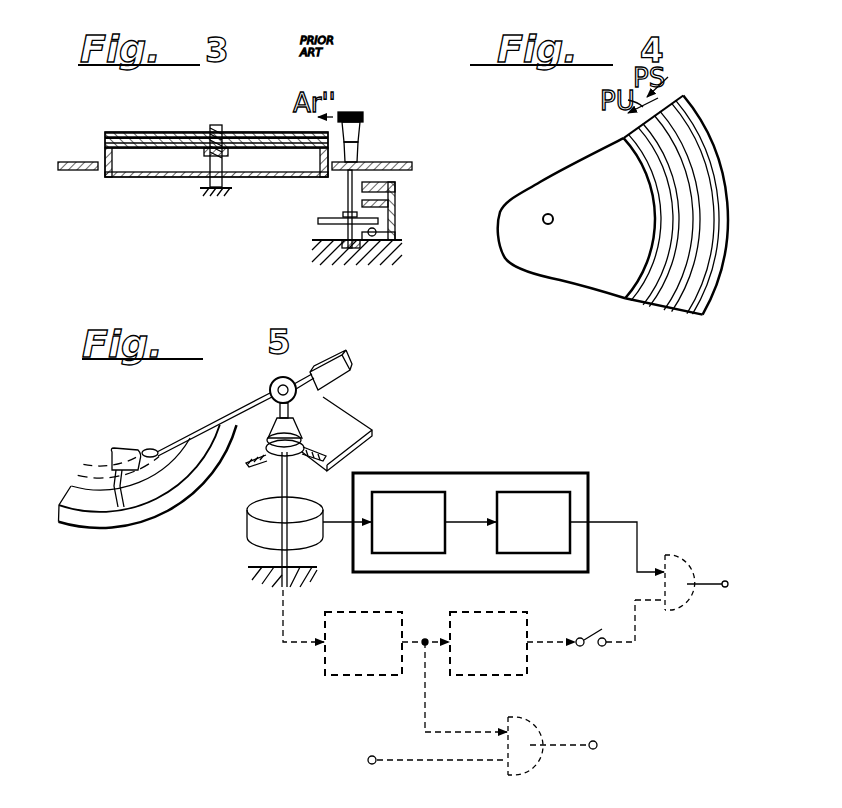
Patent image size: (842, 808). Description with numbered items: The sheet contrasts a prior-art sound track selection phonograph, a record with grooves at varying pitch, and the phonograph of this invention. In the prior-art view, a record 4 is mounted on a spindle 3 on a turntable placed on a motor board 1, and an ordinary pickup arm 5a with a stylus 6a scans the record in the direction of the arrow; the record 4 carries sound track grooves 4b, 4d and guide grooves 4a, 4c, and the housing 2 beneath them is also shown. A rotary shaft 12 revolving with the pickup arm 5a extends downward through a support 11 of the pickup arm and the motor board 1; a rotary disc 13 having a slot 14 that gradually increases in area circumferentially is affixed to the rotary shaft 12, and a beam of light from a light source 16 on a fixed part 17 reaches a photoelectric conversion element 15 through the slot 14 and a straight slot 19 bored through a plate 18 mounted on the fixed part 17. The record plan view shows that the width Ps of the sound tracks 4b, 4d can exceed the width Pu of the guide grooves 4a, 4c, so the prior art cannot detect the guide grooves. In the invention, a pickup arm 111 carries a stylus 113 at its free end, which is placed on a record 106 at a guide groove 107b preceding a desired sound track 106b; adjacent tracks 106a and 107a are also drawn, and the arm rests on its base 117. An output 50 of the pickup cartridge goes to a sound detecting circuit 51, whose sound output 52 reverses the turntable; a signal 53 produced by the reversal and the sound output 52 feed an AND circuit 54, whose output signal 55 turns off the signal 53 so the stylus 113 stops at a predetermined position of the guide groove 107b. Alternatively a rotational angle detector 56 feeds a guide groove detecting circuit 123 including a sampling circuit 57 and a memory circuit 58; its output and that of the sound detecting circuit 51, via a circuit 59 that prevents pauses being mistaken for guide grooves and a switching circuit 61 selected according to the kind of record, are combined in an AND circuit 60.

In FIG. 3, the motor board 1 is at (70, 162).
In FIG. 3, the housing 2 is at (115, 172).
In FIG. 3, the spindle 3 is at (222, 127).
In FIG. 3, the record 4 is at (206, 121).
In FIG. 4, the record 4 is at (572, 177).
In FIG. 3, the guide groove 4a is at (107, 132).
In FIG. 4, the guide groove 4a is at (690, 311).
In FIG. 3, the sound track groove 4b is at (113, 131).
In FIG. 4, the sound track groove 4b is at (672, 314).
In FIG. 3, the guide groove 4c is at (130, 131).
In FIG. 4, the guide groove 4c is at (670, 307).
In FIG. 3, the sound track groove 4d is at (148, 131).
In FIG. 4, the sound track groove 4d is at (645, 312).
In FIG. 3, the pickup arm 5a is at (358, 104).
In FIG. 3, the stylus 6a is at (359, 125).
In FIG. 3, the support 11 is at (365, 143).
In FIG. 3, the rotary shaft 12 is at (347, 180).
In FIG. 3, the rotary disc 13 is at (318, 222).
In FIG. 3, the slot 14 is at (395, 231).
In FIG. 3, the photoelectric conversion element 15 is at (395, 184).
In FIG. 3, the light source 16 is at (380, 243).
In FIG. 3, the fixed part 17 is at (395, 213).
In FIG. 3, the plate 18 is at (390, 203).
In FIG. 3, the straight slot 19 is at (353, 203).
In FIG. 5, the output of the pickup cartridge 50 is at (282, 610).
In FIG. 5, the sound detecting circuit 51 is at (377, 677).
In FIG. 5, the sound output 52 is at (425, 641).
In FIG. 5, the signal 53 is at (419, 764).
In FIG. 5, the AND circuit 54 is at (538, 718).
In FIG. 5, the output signal 55 is at (588, 749).
In FIG. 5, the rotational angle detector 56 is at (250, 525).
In FIG. 5, the sampling circuit 57 is at (407, 492).
In FIG. 5, the memory circuit 58 is at (537, 492).
In FIG. 5, the circuit for avoiding faulty operation 59 is at (507, 677).
In FIG. 5, the AND circuit 60 is at (683, 577).
In FIG. 5, the switching circuit 61 is at (592, 646).
In FIG. 5, the record 106 is at (152, 497).
In FIG. 5, the sector track 106a is at (125, 513).
In FIG. 5, the sound track 106b is at (100, 465).
In FIG. 5, the edge 107a is at (62, 498).
In FIG. 5, the guide groove 107b is at (170, 451).
In FIG. 5, the pickup arm 111 is at (220, 421).
In FIG. 5, the stylus 113 is at (110, 477).
In FIG. 5, the platform 117 is at (257, 487).
In FIG. 5, the guide groove detecting circuit 123 is at (497, 460).